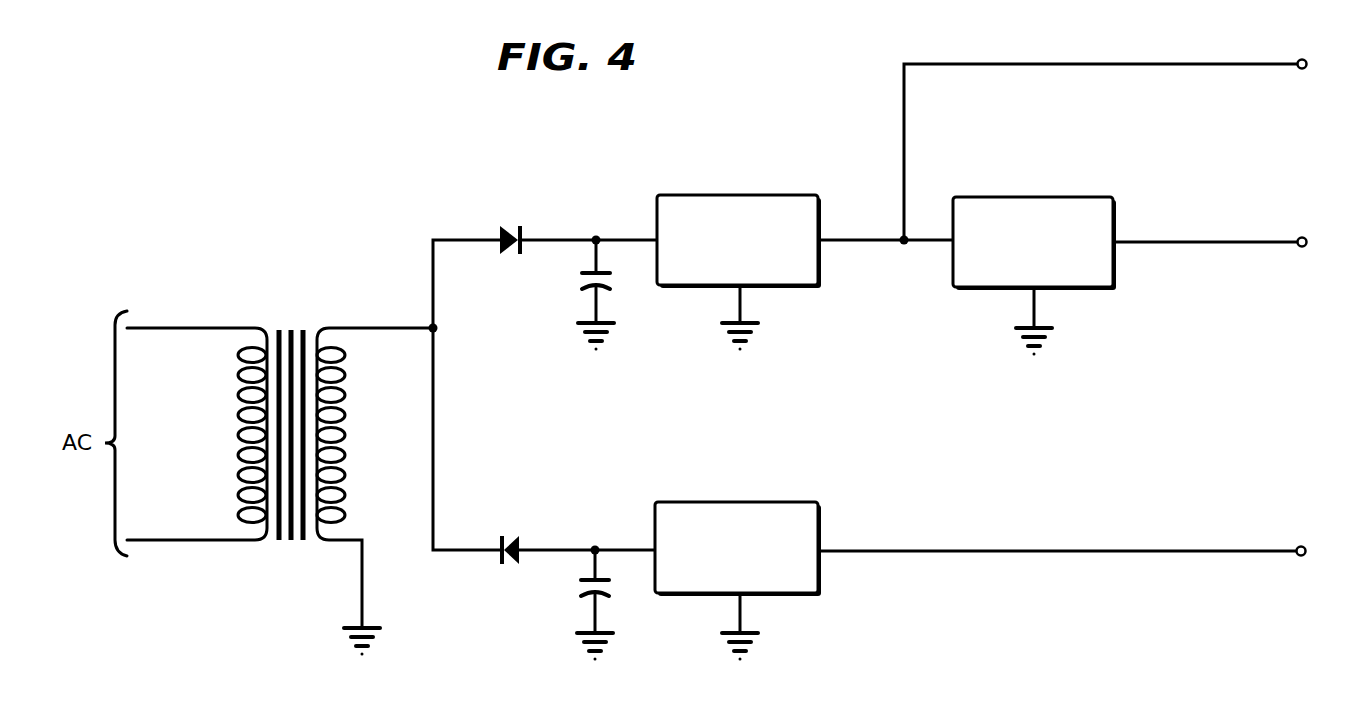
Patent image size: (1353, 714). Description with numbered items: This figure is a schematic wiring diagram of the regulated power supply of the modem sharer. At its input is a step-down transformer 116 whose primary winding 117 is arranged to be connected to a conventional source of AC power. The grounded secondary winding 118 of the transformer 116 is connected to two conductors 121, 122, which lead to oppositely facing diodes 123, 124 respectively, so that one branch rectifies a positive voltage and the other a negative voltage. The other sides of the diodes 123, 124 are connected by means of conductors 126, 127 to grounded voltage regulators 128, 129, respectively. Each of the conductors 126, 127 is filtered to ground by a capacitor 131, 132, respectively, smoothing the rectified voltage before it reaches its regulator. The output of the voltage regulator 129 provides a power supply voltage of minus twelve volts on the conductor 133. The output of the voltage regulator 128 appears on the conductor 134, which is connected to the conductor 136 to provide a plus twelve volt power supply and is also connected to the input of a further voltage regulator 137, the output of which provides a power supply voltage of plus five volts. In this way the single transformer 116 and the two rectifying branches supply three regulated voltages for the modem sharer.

The step-down transformer 116 is at (280, 445).
The primary winding 117 is at (238, 398).
The secondary winding 118 is at (343, 432).
The conductor 121 is at (433, 262).
The conductor 122 is at (433, 427).
The diode 123 is at (508, 226).
The diode 124 is at (511, 537).
The conductor 126 is at (568, 239).
The conductor 127 is at (558, 548).
The voltage regulator 128 is at (718, 194).
The voltage regulator 129 is at (777, 502).
The capacitor 131 is at (590, 288).
The capacitor 132 is at (584, 597).
The conductor 133 is at (1053, 550).
The conductor 134 is at (862, 241).
The conductor 136 is at (1098, 63).
The voltage regulator 137 is at (1083, 197).